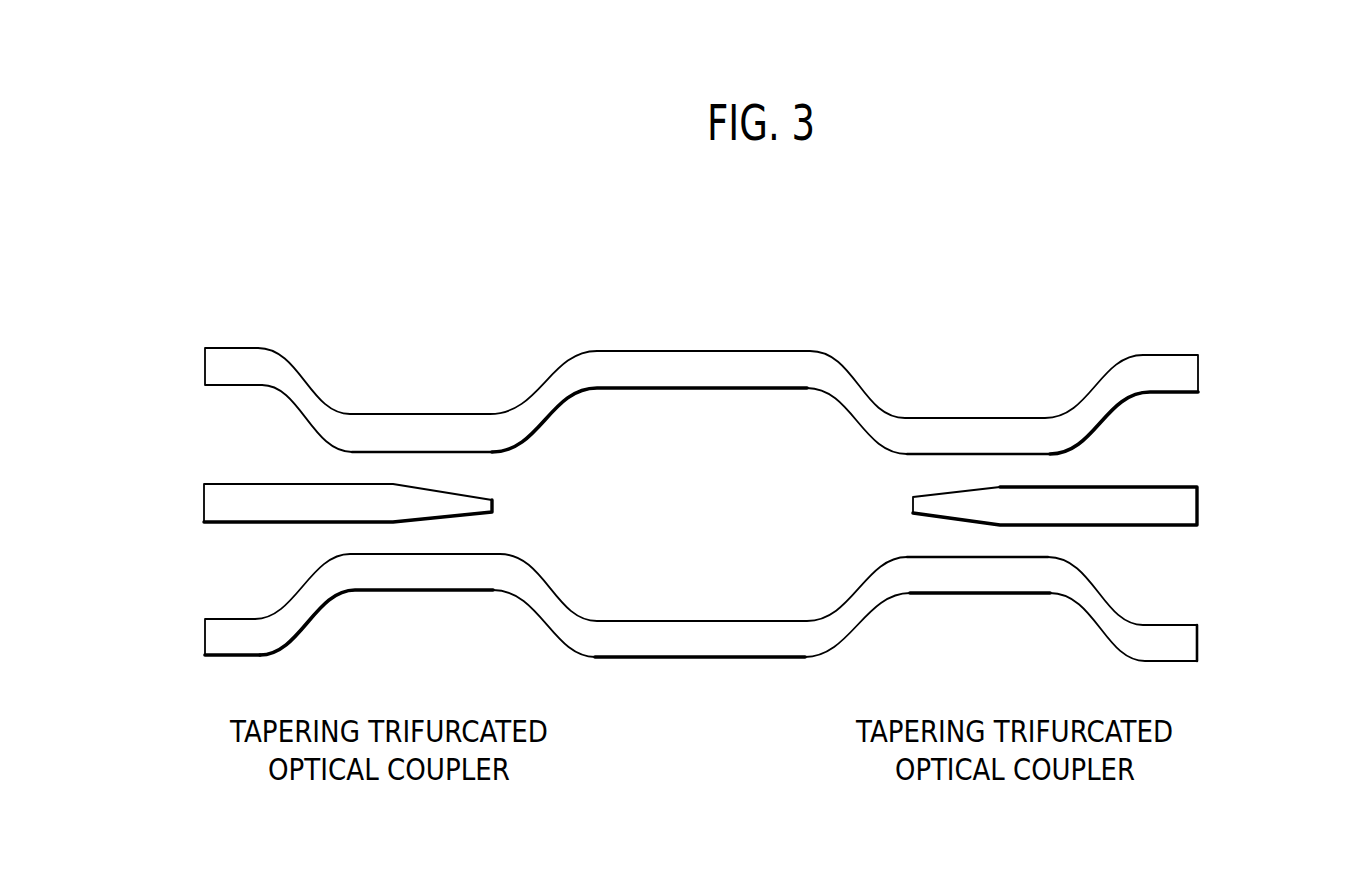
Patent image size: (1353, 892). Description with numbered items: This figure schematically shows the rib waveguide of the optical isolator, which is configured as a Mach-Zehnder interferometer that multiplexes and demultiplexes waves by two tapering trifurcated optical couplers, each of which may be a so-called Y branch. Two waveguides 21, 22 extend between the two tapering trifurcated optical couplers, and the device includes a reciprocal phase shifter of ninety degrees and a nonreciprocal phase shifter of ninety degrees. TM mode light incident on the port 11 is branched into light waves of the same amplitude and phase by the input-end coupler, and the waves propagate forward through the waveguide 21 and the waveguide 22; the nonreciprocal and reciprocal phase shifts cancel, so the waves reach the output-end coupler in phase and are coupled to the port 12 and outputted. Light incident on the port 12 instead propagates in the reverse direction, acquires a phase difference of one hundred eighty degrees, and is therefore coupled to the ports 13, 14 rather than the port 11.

The port 11 is at (286, 503).
The port 12 is at (1118, 506).
The port 13 is at (171, 367).
The port 14 is at (170, 639).
The waveguide 21 is at (639, 374).
The waveguide 22 is at (638, 637).